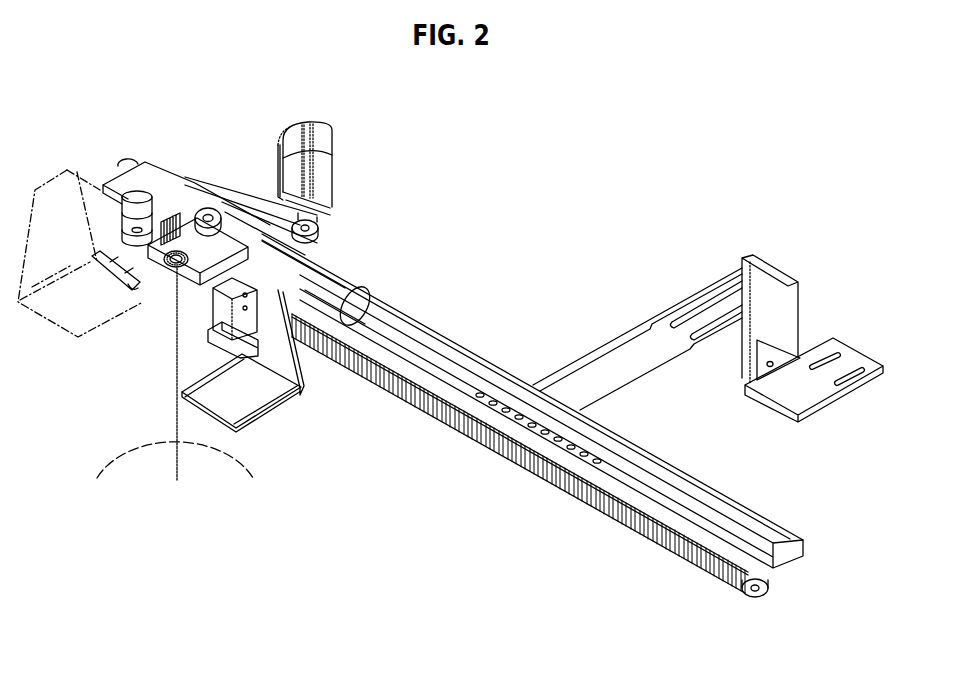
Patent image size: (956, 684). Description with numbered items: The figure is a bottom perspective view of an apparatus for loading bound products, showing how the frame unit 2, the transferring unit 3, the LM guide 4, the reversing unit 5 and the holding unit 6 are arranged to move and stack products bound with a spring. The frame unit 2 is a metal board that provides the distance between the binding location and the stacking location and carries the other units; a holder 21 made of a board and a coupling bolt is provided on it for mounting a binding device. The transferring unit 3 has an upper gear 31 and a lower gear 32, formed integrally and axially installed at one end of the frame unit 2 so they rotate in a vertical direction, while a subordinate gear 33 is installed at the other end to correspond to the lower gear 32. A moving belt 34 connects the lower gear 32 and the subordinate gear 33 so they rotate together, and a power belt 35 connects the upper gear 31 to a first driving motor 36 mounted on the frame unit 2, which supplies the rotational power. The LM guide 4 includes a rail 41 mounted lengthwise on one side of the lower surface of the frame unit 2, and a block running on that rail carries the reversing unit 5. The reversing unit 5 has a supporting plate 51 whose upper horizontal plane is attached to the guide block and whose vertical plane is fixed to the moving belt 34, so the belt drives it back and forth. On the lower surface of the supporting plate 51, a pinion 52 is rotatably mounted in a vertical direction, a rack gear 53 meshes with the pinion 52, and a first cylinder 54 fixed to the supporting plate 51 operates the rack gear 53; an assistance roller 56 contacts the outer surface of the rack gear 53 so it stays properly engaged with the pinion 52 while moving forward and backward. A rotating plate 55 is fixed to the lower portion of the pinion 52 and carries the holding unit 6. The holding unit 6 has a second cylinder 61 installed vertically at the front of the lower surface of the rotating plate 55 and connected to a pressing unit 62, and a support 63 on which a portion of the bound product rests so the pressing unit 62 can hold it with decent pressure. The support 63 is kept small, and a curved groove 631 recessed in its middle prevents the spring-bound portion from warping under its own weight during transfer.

The frame unit 2 is at (535, 347).
The holder 21 is at (787, 303).
The transferring unit 3 is at (232, 138).
The upper gear 31 is at (130, 162).
The lower gear 32 is at (110, 240).
The subordinate gear 33 is at (767, 592).
The moving belt 34 is at (527, 460).
The power belt 35 is at (258, 195).
The first driving motor 36 is at (323, 170).
The LM guide 4 is at (733, 515).
The rail 41 is at (690, 500).
The reversing unit 5 is at (316, 266).
The supporting plate 51 is at (200, 190).
The pinion 52 is at (127, 275).
The rack gear 53 is at (208, 278).
The first cylinder 54 is at (352, 292).
The rotating plate 55 is at (170, 272).
The assistance roller 56 is at (212, 208).
The holding unit 6 is at (297, 412).
The second cylinder 61 is at (280, 304).
The pressing unit 62 is at (297, 350).
The support 63 is at (253, 403).
The curved groove 631 is at (213, 372).